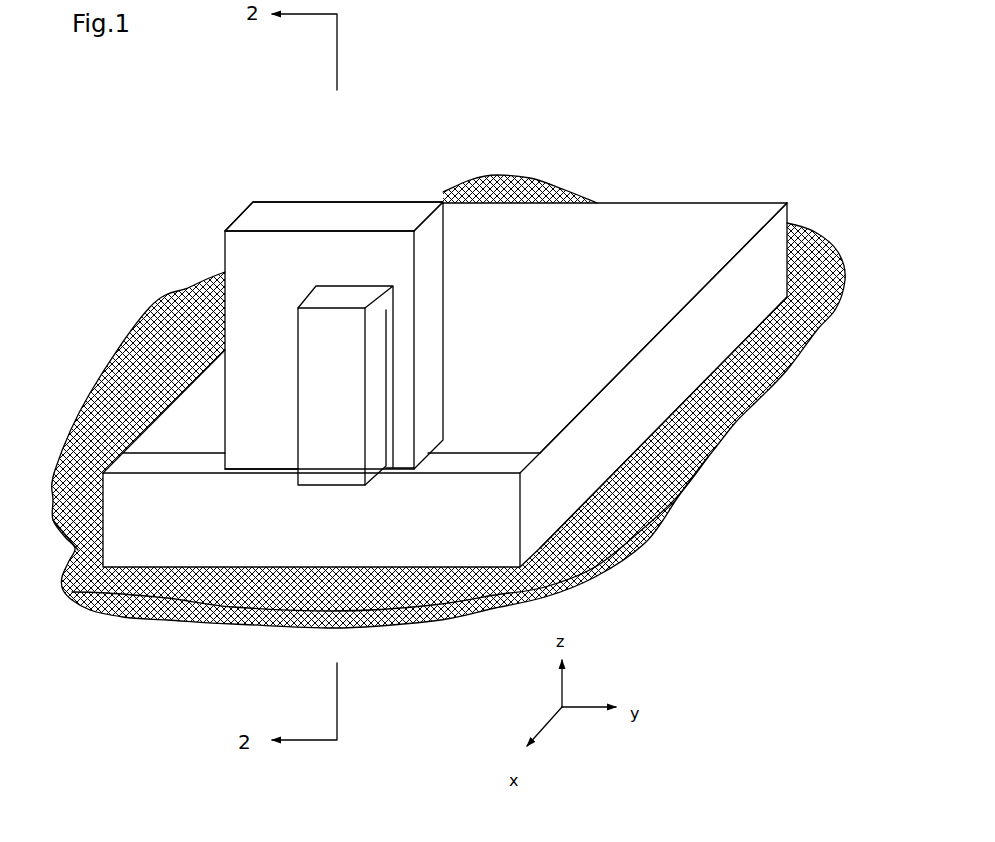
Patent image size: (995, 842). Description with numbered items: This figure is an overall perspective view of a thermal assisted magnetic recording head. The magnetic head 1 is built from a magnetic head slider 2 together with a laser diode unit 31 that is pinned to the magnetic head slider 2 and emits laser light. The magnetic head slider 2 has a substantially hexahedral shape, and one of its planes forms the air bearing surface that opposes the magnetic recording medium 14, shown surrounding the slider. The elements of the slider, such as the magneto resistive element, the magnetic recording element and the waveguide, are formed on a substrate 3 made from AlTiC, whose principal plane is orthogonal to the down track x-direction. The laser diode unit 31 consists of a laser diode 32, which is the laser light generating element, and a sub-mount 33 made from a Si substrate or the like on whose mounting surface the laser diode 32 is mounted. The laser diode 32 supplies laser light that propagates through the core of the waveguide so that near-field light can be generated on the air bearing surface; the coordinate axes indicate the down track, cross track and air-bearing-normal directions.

The magnetic head 1 is at (391, 153).
The magnetic head slider 2 is at (658, 197).
The substrate 3 is at (727, 340).
The magnetic recording medium 14 is at (82, 412).
The laser diode unit 31 is at (292, 182).
The laser diode 32 is at (300, 319).
The sub-mount 33 is at (340, 208).